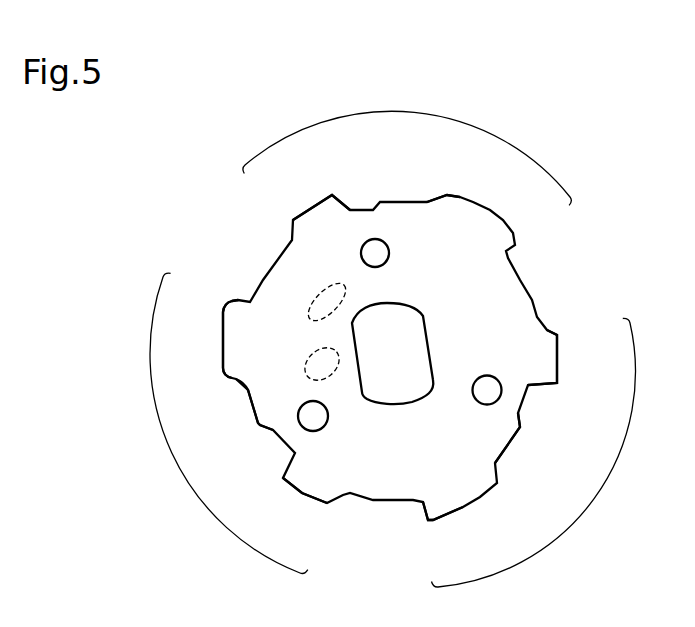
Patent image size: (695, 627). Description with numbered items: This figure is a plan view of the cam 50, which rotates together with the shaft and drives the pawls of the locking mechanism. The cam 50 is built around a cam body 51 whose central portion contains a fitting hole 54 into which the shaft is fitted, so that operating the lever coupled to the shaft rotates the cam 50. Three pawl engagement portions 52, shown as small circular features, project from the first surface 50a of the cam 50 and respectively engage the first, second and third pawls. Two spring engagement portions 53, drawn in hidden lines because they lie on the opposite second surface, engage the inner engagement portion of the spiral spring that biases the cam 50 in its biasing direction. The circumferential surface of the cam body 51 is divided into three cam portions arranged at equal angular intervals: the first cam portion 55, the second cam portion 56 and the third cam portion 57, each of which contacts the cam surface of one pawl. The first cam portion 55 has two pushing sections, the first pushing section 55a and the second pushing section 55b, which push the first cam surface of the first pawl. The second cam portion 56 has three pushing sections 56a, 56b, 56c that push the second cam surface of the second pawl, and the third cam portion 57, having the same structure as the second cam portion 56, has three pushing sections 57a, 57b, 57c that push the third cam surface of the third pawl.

The cam 50 is at (442, 326).
The first surface 50a is at (522, 303).
The cam body 51 is at (419, 357).
The pawl engagement portion 52 is at (389, 251).
The spring engagement portion 53 is at (308, 356).
The fitting hole 54 is at (423, 324).
The first cam portion 55 is at (413, 112).
The first pushing section 55a is at (333, 196).
The second pushing section 55b is at (452, 195).
The second cam portion 56 is at (590, 490).
The pushing section 56a is at (558, 362).
The pushing section 56b is at (523, 427).
The pushing section 56c is at (473, 507).
The third cam portion 57 is at (166, 450).
The pushing section 57a is at (302, 493).
The pushing section 57b is at (260, 425).
The pushing section 57c is at (222, 345).